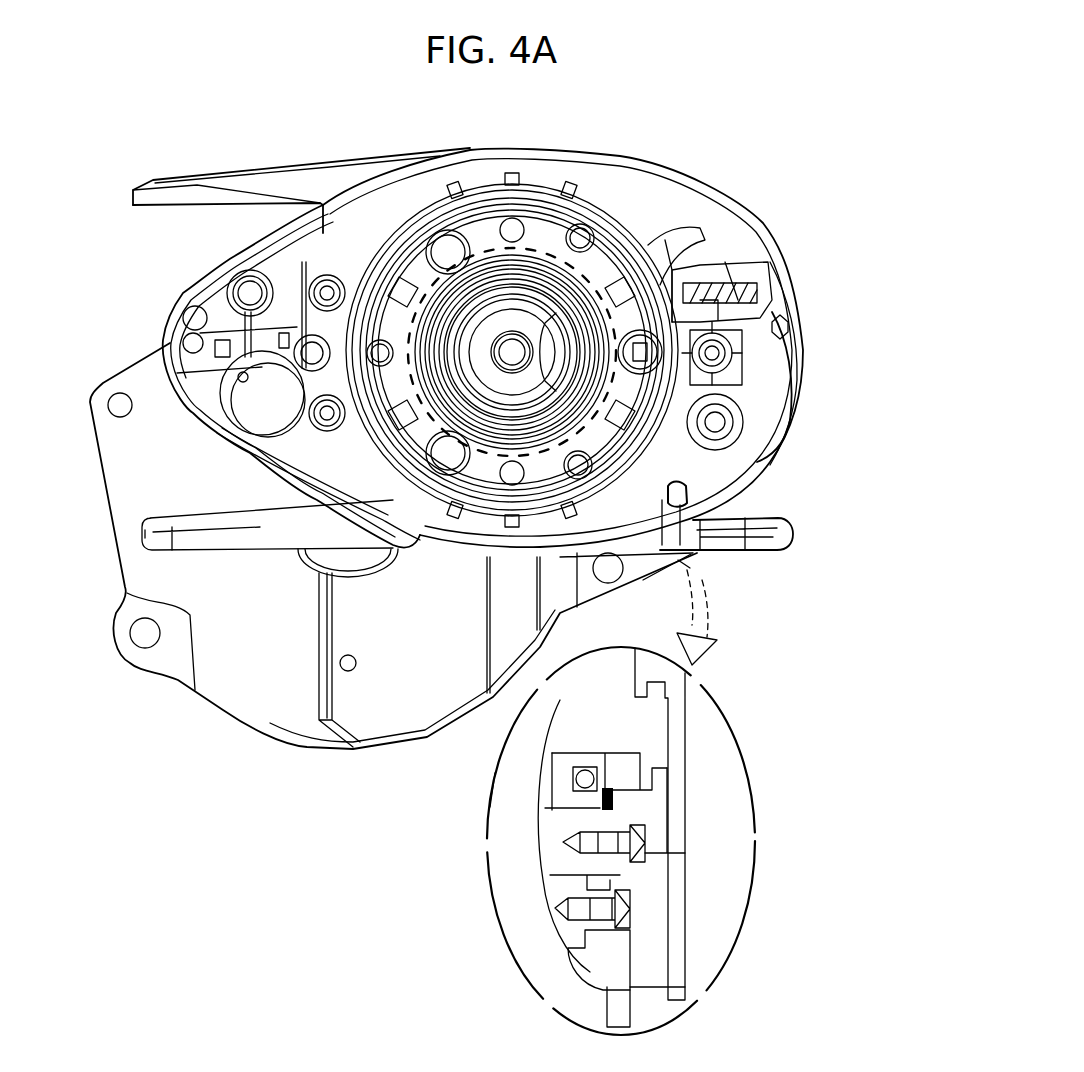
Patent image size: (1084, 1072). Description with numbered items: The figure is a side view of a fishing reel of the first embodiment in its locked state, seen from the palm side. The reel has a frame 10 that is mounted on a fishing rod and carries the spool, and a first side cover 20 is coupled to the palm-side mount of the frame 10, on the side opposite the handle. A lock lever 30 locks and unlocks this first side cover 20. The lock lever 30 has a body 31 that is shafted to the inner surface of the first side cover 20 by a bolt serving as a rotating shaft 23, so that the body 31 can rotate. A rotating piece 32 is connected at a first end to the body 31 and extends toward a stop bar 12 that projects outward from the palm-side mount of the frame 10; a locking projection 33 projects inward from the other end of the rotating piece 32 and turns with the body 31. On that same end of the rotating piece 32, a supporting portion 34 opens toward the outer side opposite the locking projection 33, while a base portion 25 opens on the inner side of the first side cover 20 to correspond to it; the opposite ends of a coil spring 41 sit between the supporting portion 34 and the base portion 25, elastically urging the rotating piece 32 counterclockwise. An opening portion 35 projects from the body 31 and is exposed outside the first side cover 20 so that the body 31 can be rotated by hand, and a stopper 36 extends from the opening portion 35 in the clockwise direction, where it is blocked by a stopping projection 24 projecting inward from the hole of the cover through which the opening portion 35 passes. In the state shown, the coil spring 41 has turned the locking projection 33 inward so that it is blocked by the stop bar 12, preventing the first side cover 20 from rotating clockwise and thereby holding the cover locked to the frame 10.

The frame 10 is at (678, 775).
The stop bar 12 is at (755, 313).
The first side cover 20 is at (200, 279).
The rotating shaft 23 is at (715, 422).
The stopping projection 24 is at (740, 550).
The base portion 25 is at (714, 292).
The lock lever 30 is at (806, 386).
The body 31 is at (693, 453).
The rotating piece 32 is at (717, 322).
The locking projection 33 is at (700, 283).
The supporting portion 34 is at (690, 290).
The opening portion 35 is at (799, 391).
The stopper 36 is at (690, 490).
The coil spring 41 is at (713, 322).